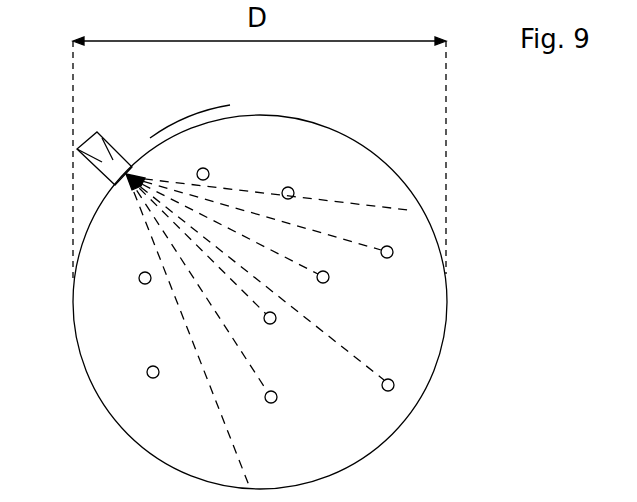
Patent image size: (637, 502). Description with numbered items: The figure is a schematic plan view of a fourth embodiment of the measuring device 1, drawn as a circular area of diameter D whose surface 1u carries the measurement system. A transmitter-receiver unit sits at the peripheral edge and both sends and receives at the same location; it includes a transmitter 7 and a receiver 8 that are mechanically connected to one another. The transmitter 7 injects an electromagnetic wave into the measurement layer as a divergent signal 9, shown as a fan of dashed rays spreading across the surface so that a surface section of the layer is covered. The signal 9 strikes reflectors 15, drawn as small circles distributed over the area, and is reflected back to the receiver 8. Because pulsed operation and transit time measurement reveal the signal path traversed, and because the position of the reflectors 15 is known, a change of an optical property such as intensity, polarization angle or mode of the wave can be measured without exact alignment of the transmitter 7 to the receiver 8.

The measuring device 1 is at (345, 108).
The upper surface of substrate 1u is at (182, 128).
The transmitter 7 is at (77, 149).
The receiver 8 is at (97, 132).
The signal 9 is at (394, 303).
The reflectors 15 is at (264, 319).